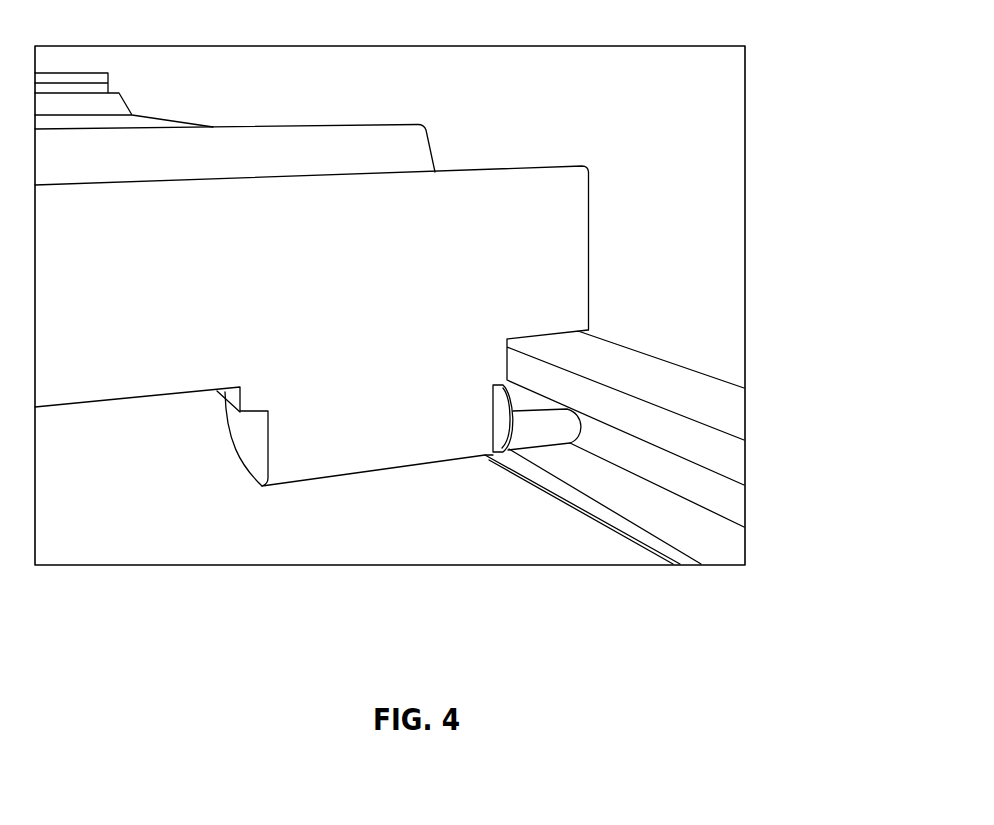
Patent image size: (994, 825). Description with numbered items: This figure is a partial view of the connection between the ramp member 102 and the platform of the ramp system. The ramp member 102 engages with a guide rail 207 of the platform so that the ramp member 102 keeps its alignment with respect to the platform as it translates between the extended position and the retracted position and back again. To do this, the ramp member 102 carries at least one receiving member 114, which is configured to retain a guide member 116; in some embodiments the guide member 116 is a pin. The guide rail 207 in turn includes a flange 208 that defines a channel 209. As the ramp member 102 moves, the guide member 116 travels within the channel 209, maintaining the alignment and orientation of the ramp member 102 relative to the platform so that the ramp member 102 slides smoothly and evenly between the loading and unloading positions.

The ramp member 102 is at (350, 200).
The receiving member 114 is at (300, 442).
The guide member 116 is at (567, 417).
The guide rail 207 is at (658, 328).
The flange 208 is at (697, 442).
The channel 209 is at (687, 473).